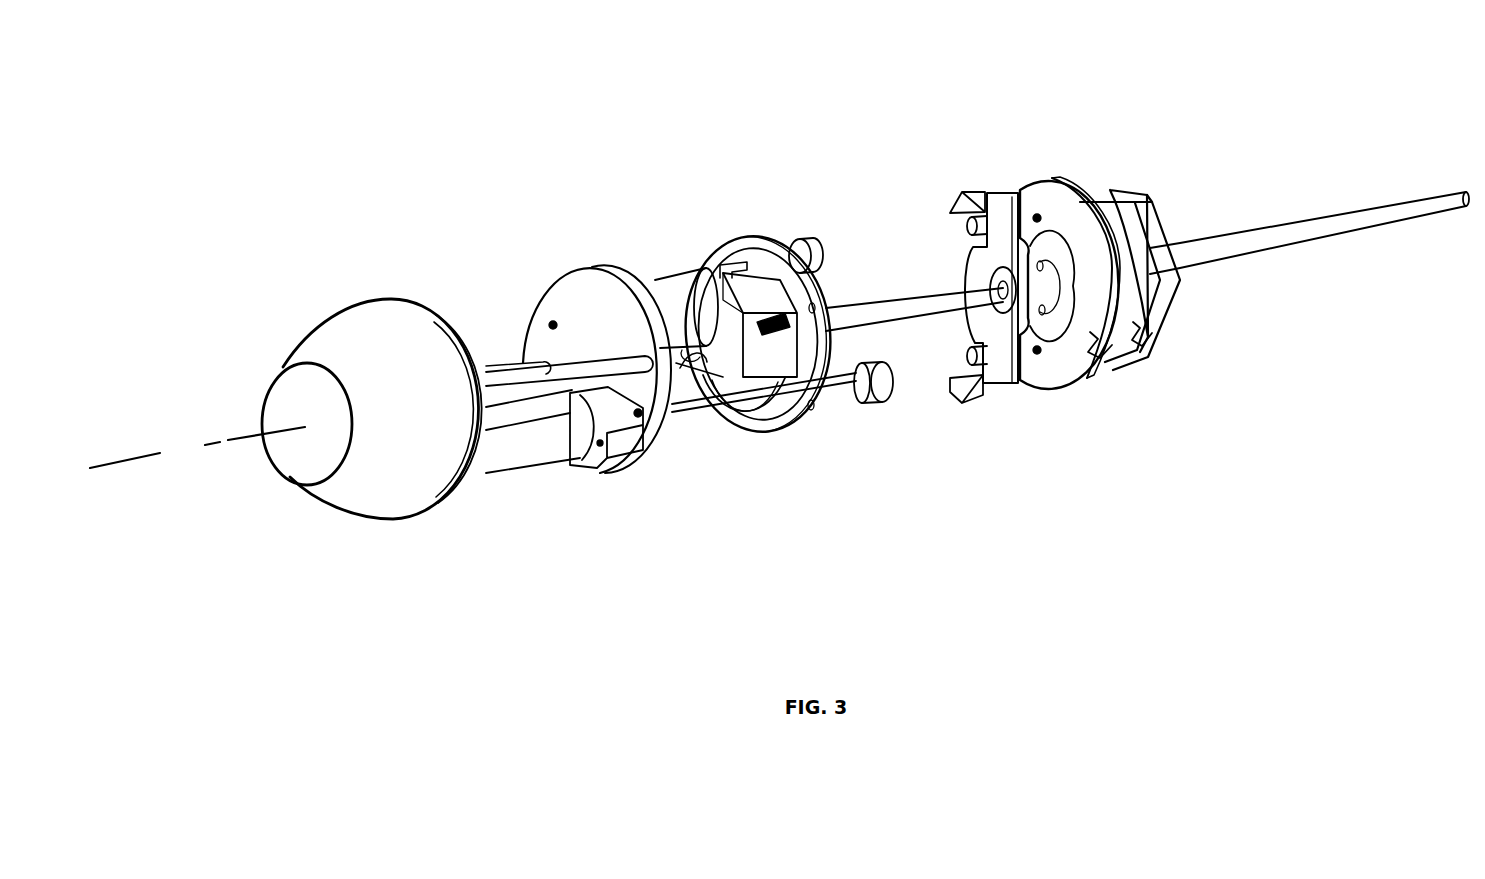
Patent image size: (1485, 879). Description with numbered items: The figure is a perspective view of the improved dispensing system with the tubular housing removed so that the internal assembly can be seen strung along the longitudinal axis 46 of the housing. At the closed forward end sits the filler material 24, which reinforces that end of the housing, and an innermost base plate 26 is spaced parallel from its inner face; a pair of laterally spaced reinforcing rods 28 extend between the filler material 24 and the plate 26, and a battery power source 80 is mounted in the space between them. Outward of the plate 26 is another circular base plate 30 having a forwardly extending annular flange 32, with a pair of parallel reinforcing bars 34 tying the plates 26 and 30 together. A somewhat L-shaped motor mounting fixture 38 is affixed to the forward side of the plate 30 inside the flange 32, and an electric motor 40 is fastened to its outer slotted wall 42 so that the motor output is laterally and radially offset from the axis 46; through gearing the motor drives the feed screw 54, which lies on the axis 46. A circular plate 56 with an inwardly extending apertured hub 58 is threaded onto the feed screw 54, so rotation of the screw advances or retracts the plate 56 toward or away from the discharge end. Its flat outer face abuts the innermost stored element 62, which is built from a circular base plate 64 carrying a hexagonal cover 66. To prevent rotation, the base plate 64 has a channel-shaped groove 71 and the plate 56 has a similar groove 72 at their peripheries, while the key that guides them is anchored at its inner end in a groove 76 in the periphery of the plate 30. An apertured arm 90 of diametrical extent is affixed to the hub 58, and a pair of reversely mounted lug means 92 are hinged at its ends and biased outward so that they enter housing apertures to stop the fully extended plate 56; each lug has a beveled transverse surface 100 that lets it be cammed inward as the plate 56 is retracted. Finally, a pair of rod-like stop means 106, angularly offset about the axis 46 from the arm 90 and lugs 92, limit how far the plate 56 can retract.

The filler material 24 is at (375, 467).
The base plate 26 is at (648, 400).
The reinforcing rods 28 is at (503, 375).
The base plate 30 is at (783, 315).
The annular flange 32 is at (706, 243).
The reinforcing bars 34 is at (683, 408).
The motor mounting fixture 38 is at (760, 365).
The electric motor 40 is at (655, 285).
The outer slotted wall 42 is at (722, 258).
The longitudinal axis 46 is at (160, 453).
The feed screw 54 is at (1252, 255).
The circular plate 56 is at (1027, 195).
The apertured hub 58 is at (1082, 200).
The stored element 62 is at (1125, 190).
The base plate 64 is at (1068, 175).
The cover 66 is at (1165, 213).
The channel-shaped groove 71 is at (1158, 358).
The channel-shaped groove 72 is at (1102, 370).
The channel-shaped groove 76 is at (812, 405).
The battery power source 80 is at (500, 463).
The apertured arm 90 is at (1020, 378).
The lug means 92 is at (987, 195).
The beveled transverse surface 100 is at (960, 192).
The stop means 106 is at (792, 245).